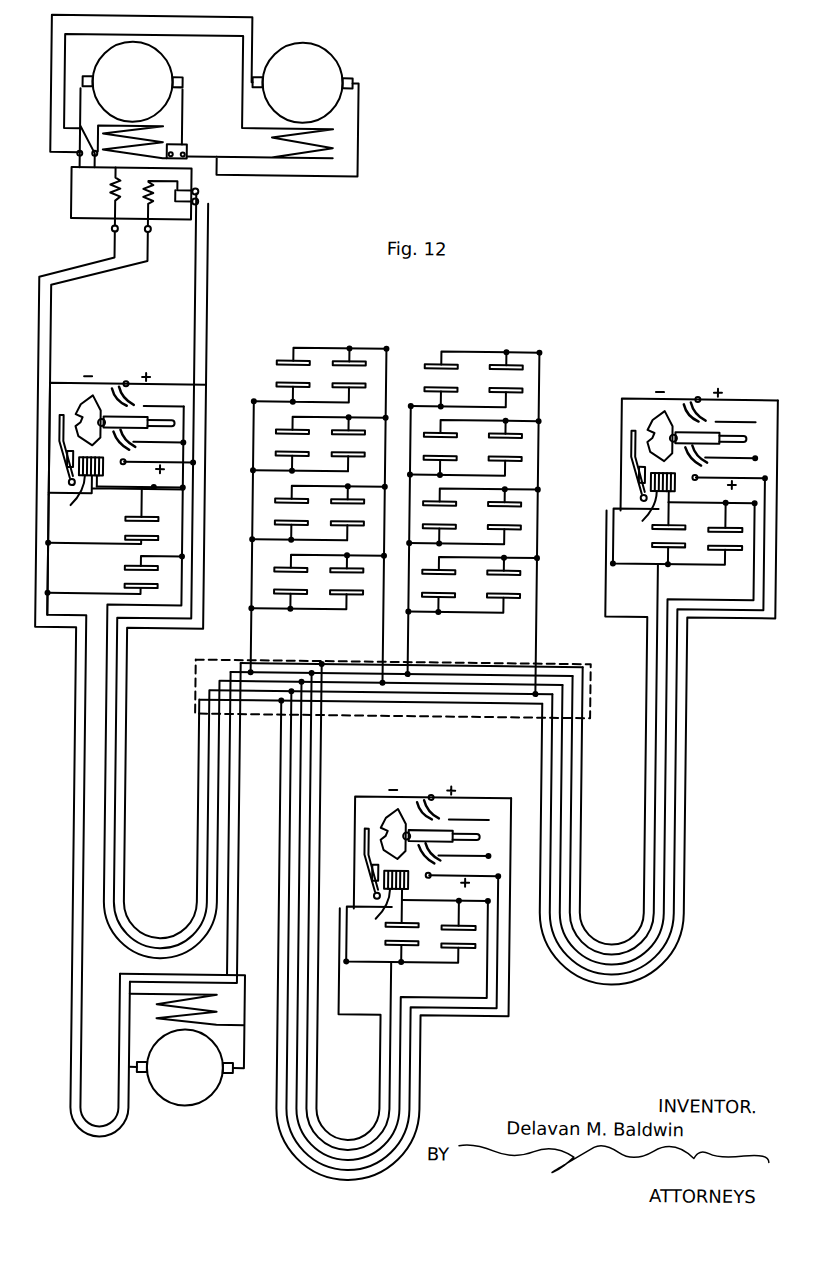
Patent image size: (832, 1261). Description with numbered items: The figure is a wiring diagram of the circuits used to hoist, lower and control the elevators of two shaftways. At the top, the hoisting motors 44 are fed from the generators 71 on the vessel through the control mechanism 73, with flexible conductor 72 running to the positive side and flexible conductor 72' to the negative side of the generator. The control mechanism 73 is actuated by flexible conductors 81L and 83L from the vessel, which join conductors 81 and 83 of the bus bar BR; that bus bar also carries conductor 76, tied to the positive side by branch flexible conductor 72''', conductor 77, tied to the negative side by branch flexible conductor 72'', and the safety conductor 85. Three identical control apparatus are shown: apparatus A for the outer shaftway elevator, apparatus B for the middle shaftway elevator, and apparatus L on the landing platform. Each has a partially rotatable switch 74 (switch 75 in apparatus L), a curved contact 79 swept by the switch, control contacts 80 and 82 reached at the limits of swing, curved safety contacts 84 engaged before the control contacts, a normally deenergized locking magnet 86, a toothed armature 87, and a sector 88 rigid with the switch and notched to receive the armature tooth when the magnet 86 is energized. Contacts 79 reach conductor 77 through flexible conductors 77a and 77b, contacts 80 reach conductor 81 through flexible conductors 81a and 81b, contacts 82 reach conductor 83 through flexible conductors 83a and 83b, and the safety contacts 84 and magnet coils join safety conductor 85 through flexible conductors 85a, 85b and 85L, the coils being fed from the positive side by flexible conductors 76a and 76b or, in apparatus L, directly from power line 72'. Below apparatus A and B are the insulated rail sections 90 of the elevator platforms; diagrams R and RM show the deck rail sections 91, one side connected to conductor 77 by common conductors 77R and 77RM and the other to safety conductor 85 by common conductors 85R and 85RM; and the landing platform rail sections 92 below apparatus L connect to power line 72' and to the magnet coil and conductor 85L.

The electric motor 44 is at (158, 78).
The control mechanism 73 is at (66, 193).
The generator 71 is at (203, 1094).
The flexible conductor 72 is at (78, 684).
The flexible conductor 72' is at (94, 679).
The branch flexible conductor 72'' is at (210, 823).
The branch flexible conductor 72''' is at (199, 823).
The switch 74 is at (738, 432).
The switch 75 is at (156, 420).
The curved contact 79 is at (110, 392).
The control contact 80 is at (124, 386).
The control contact 82 is at (122, 465).
The curved safety contact 84 is at (131, 406).
The locking magnet 86 is at (70, 507).
The toothed armature 87 is at (57, 419).
The sector 88 is at (93, 409).
The insulated rail section 90 is at (722, 526).
The insulated rail section 91 is at (337, 374).
The insulated rail section 92 is at (137, 524).
The flexible conductor 85L is at (182, 455).
The flexible conductor 83L is at (191, 318).
The flexible conductor 81L is at (204, 318).
The common conductor 77RM is at (251, 495).
The common conductor 85RM is at (383, 641).
The common conductor 77R is at (408, 406).
The common conductor 85R is at (538, 640).
The safety conductor 85 is at (322, 665).
The conductor 76 is at (426, 665).
The conductor 77 is at (468, 676).
The conductor 83 is at (411, 697).
The conductor 81 is at (368, 703).
The flexible conductor 77a is at (618, 408).
The flexible conductor 76a is at (607, 590).
The flexible conductor 85a is at (752, 584).
The flexible conductor 83a is at (764, 472).
The flexible conductor 81a is at (776, 440).
The flexible conductor 77b is at (357, 893).
The flexible conductor 76b is at (343, 991).
The flexible conductor 85b is at (491, 998).
The flexible conductor 83b is at (502, 970).
The flexible conductor 81b is at (513, 850).
The control apparatus L is at (84, 366).
The control apparatus A is at (637, 390).
The control apparatus B is at (386, 794).
The diagram RM is at (390, 355).
The diagram R is at (540, 365).
The bus bar BR is at (206, 661).